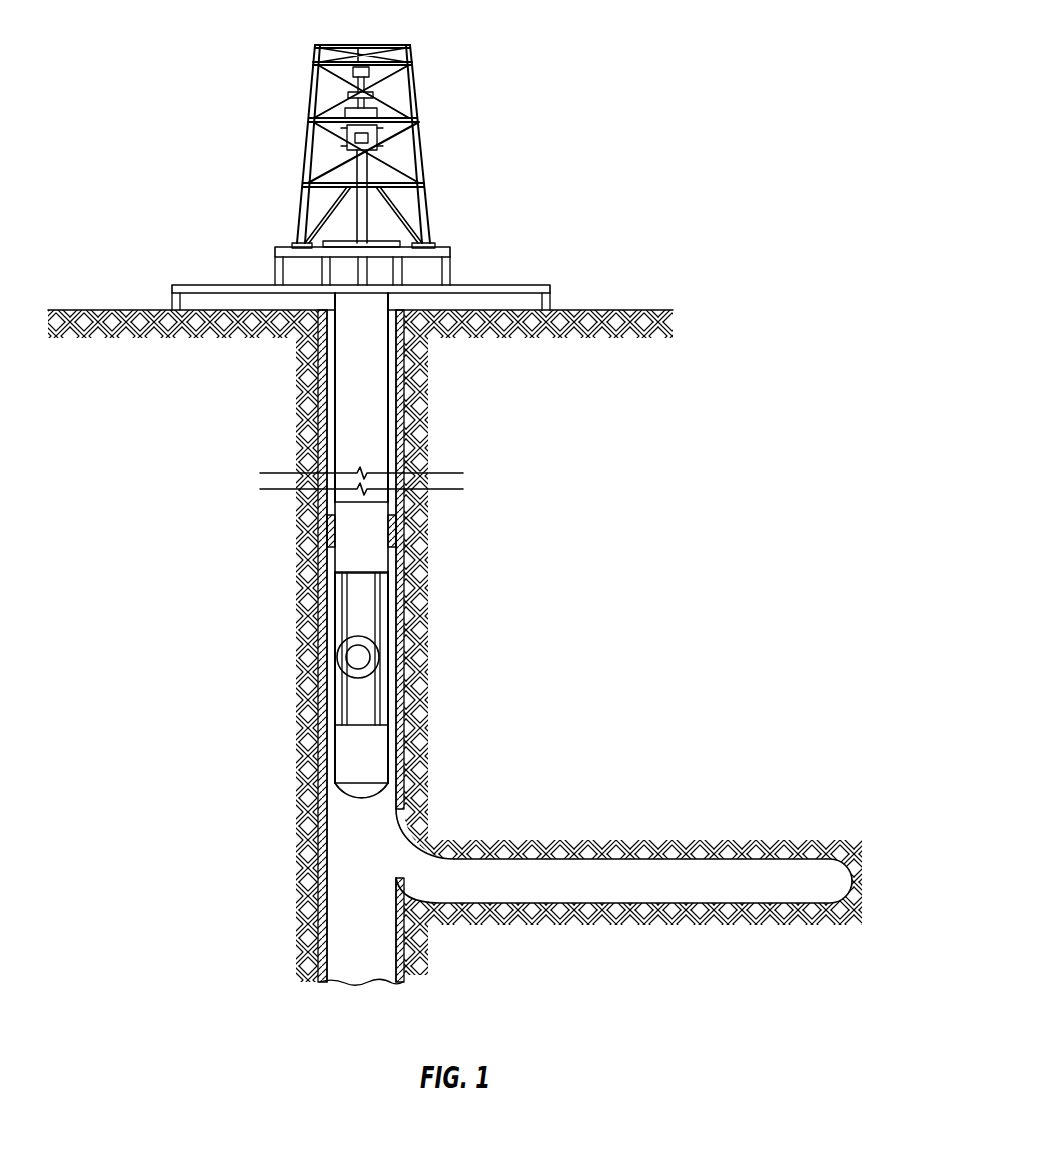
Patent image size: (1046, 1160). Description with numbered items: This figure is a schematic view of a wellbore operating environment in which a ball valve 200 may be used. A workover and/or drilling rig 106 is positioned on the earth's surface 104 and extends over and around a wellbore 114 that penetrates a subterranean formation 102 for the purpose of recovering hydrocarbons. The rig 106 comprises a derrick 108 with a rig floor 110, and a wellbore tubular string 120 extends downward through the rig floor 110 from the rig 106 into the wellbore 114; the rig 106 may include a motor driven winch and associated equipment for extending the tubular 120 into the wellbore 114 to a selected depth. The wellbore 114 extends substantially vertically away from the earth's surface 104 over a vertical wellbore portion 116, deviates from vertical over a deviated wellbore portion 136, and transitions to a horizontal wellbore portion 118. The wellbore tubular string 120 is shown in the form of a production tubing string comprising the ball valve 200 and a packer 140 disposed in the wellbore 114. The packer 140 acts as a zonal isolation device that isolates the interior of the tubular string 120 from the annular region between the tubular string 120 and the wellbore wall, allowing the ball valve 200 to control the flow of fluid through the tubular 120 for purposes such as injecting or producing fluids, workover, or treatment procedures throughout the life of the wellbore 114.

The subterranean formation 102 is at (420, 332).
The earth's surface 104 is at (658, 311).
The workover and/or drilling rig 106 is at (458, 118).
The derrick 108 is at (312, 93).
The rig floor 110 is at (283, 242).
The wellbore 114 is at (303, 402).
The vertical wellbore portion 116 is at (398, 565).
The horizontal wellbore portion 118 is at (520, 899).
The wellbore tubular string 120 is at (397, 510).
The deviated wellbore portion 136 is at (438, 830).
The packer 140 is at (332, 522).
The ball valve 200 is at (305, 582).